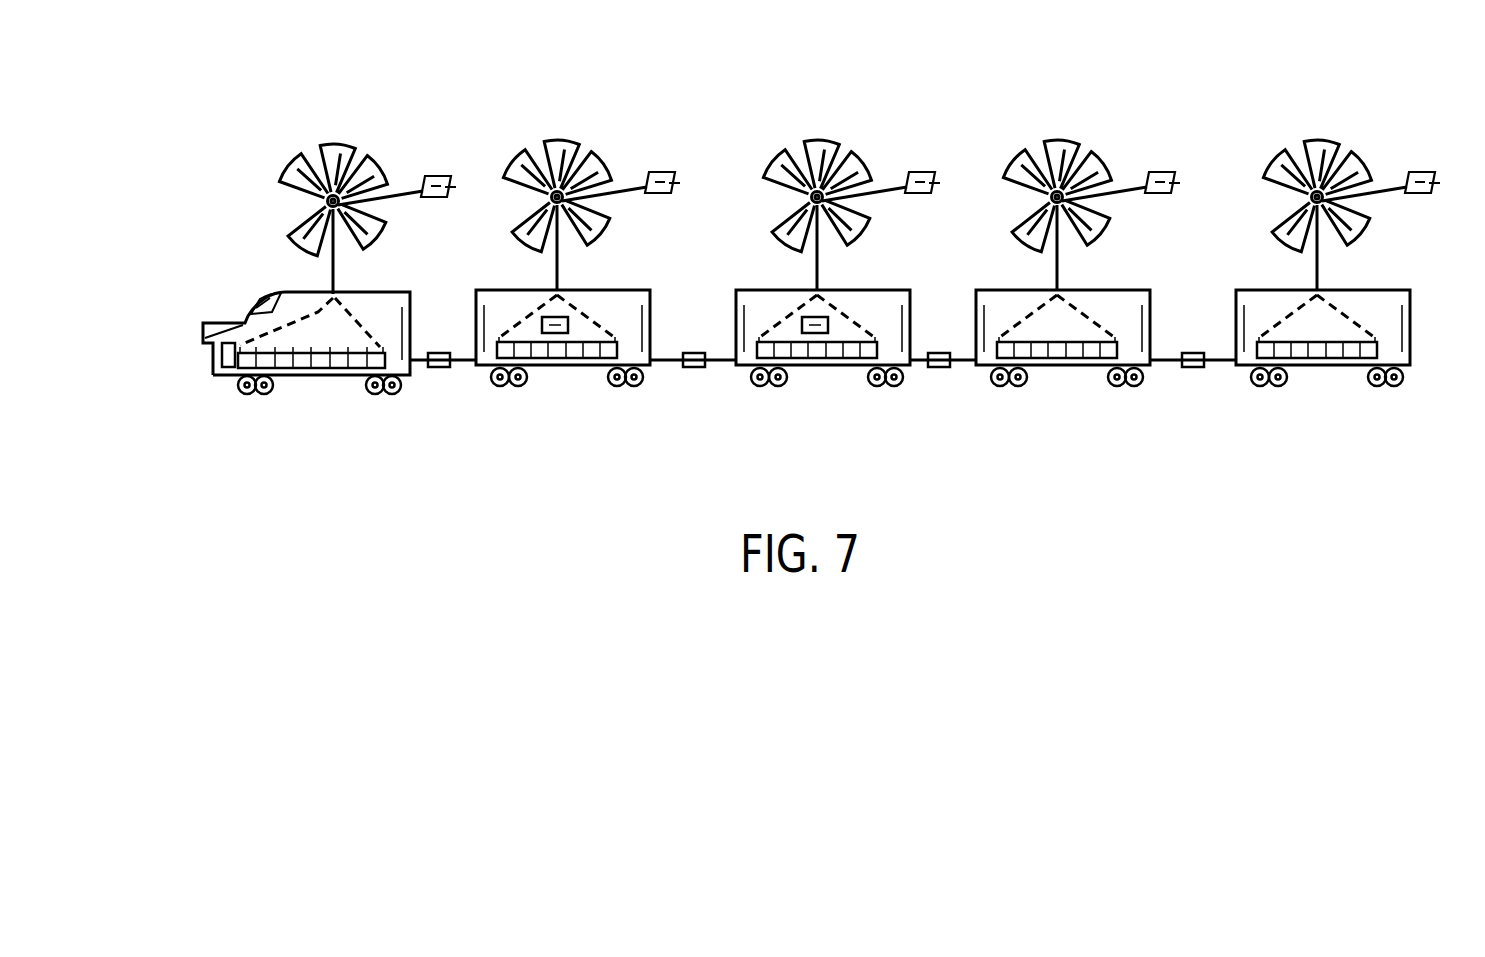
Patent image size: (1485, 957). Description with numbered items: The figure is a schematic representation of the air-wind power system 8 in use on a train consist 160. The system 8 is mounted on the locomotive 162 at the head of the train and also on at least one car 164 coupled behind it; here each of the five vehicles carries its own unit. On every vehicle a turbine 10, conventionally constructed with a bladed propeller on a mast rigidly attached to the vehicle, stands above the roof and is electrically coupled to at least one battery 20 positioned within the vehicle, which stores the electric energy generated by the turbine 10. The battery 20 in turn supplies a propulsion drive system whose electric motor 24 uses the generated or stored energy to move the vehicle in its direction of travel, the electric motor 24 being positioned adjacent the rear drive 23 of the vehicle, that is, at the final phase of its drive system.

The air-wind power system 8 is at (262, 148).
The turbine 10 is at (1210, 85).
The battery 20 is at (1276, 346).
The rear drive 23 is at (758, 385).
The electric motor 24 is at (823, 331).
The train consist 160 is at (212, 358).
The locomotive 162 is at (412, 308).
The car 164 is at (760, 289).